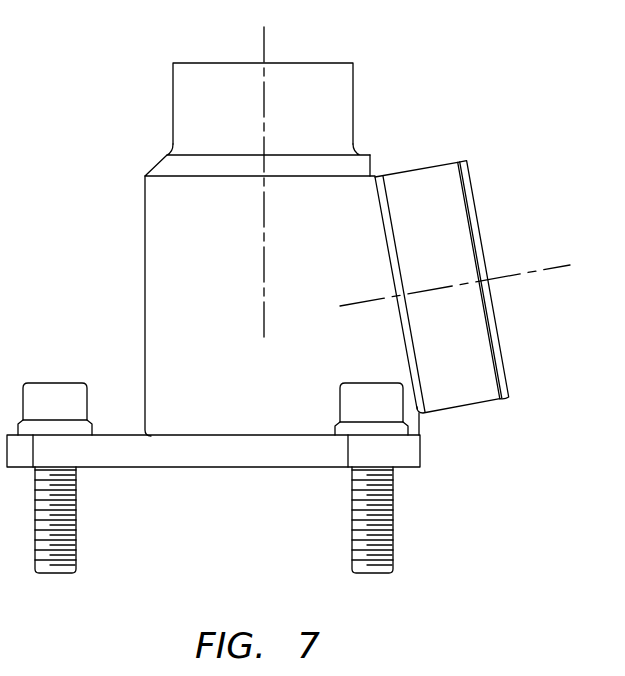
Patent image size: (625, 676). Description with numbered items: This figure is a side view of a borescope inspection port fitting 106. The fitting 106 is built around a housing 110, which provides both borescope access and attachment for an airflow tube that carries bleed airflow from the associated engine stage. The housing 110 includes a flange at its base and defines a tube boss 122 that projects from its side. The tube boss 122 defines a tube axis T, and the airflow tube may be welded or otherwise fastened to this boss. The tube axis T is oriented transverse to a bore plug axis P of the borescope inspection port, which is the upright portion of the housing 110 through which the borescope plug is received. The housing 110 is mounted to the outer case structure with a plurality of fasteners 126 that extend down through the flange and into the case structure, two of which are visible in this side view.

The borescope inspection (BSI) port fitting 106 is at (497, 120).
The housing 110 is at (165, 233).
The tube boss 122 is at (413, 183).
The fasteners 126 is at (393, 523).
The bore plug axis P is at (264, 43).
The tube axis T is at (549, 265).